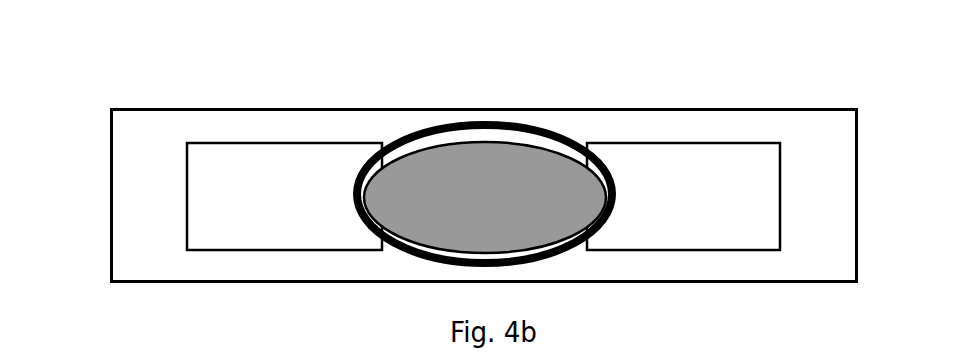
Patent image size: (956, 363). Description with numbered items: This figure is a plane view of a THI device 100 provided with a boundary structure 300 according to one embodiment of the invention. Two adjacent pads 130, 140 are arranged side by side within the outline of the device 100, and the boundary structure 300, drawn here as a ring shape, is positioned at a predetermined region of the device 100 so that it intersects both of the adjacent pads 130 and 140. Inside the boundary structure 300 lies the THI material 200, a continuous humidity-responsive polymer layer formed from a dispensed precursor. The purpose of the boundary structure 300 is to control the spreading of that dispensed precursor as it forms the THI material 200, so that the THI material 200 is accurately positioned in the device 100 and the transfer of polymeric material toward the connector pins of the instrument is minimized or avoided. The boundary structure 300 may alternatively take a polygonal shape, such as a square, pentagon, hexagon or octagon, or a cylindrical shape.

The device 100 is at (106, 99).
The pad 130 is at (215, 185).
The pad 140 is at (765, 195).
The THI material 200 is at (392, 182).
The boundary structure 300 is at (553, 257).